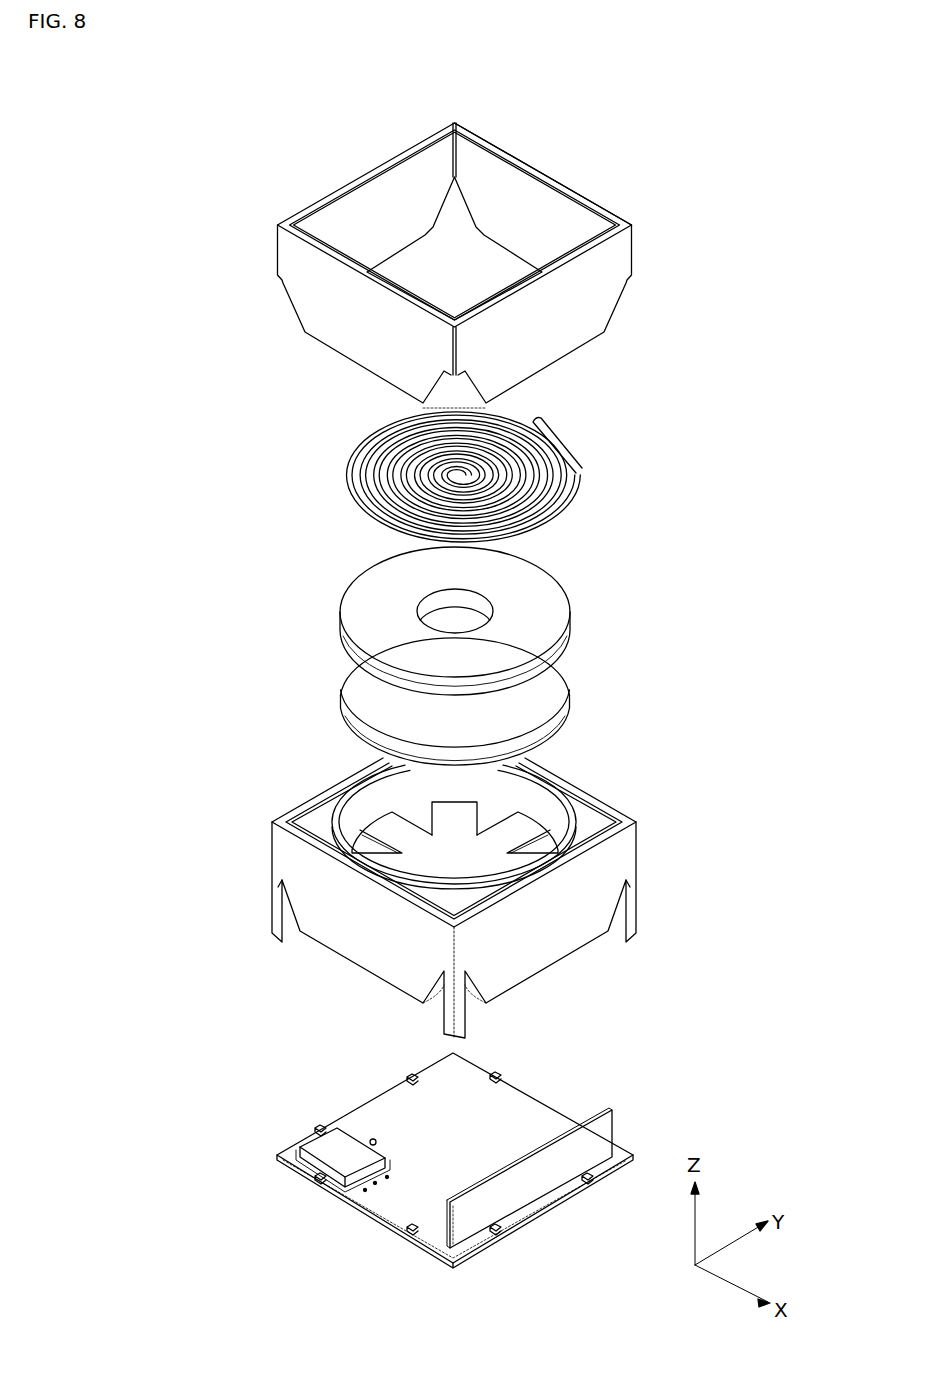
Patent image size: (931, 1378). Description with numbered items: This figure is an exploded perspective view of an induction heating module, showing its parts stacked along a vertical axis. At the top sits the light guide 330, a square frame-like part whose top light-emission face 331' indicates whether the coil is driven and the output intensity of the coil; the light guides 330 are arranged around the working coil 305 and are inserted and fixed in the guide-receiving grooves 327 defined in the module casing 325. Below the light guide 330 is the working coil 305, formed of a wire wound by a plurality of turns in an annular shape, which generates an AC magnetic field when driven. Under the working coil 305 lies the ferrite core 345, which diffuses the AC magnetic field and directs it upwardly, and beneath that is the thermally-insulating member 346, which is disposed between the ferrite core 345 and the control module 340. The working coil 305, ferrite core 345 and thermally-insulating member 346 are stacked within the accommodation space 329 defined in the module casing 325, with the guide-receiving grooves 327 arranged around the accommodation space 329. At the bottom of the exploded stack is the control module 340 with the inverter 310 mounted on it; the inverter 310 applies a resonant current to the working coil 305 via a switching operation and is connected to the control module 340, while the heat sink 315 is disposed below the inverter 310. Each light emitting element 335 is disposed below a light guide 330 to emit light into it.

The light guide 330 is at (590, 201).
The top light-emission face 331' is at (543, 152).
The working coil 305 is at (577, 462).
The ferrite core 345 is at (545, 592).
The thermally-insulating member 346 is at (545, 695).
The module casing 325 is at (634, 845).
The accommodation space 329 is at (490, 790).
The guide-receiving groove 327 is at (610, 800).
The inverter 310 is at (435, 1160).
The heat sink 315 is at (313, 1172).
The light emitting element 335 is at (500, 1078).
The control module 340 is at (628, 1150).